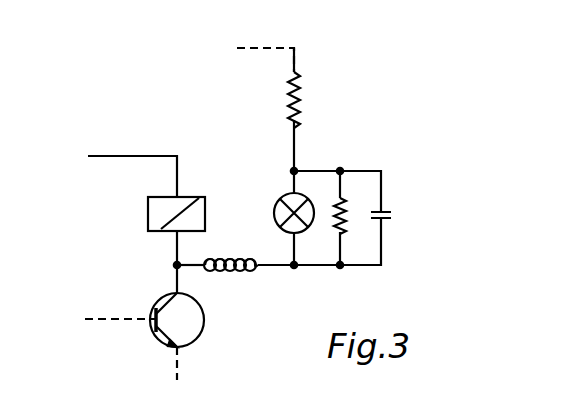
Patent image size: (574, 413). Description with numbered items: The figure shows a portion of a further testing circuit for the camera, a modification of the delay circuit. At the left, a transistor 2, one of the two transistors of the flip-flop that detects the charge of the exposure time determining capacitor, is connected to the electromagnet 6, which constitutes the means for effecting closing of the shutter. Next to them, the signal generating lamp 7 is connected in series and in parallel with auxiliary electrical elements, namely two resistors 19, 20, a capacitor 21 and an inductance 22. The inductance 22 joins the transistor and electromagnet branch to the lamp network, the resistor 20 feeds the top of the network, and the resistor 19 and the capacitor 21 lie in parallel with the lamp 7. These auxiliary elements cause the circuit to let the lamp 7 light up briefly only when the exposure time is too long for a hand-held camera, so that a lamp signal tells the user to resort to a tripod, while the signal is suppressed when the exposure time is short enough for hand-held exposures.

The transistor 2 is at (160, 339).
The electromagnet 6 is at (199, 199).
The signal generating lamp 7 is at (282, 209).
The resistor 19 is at (346, 215).
The resistor 20 is at (303, 96).
The capacitor 21 is at (392, 215).
The inductance 22 is at (245, 272).